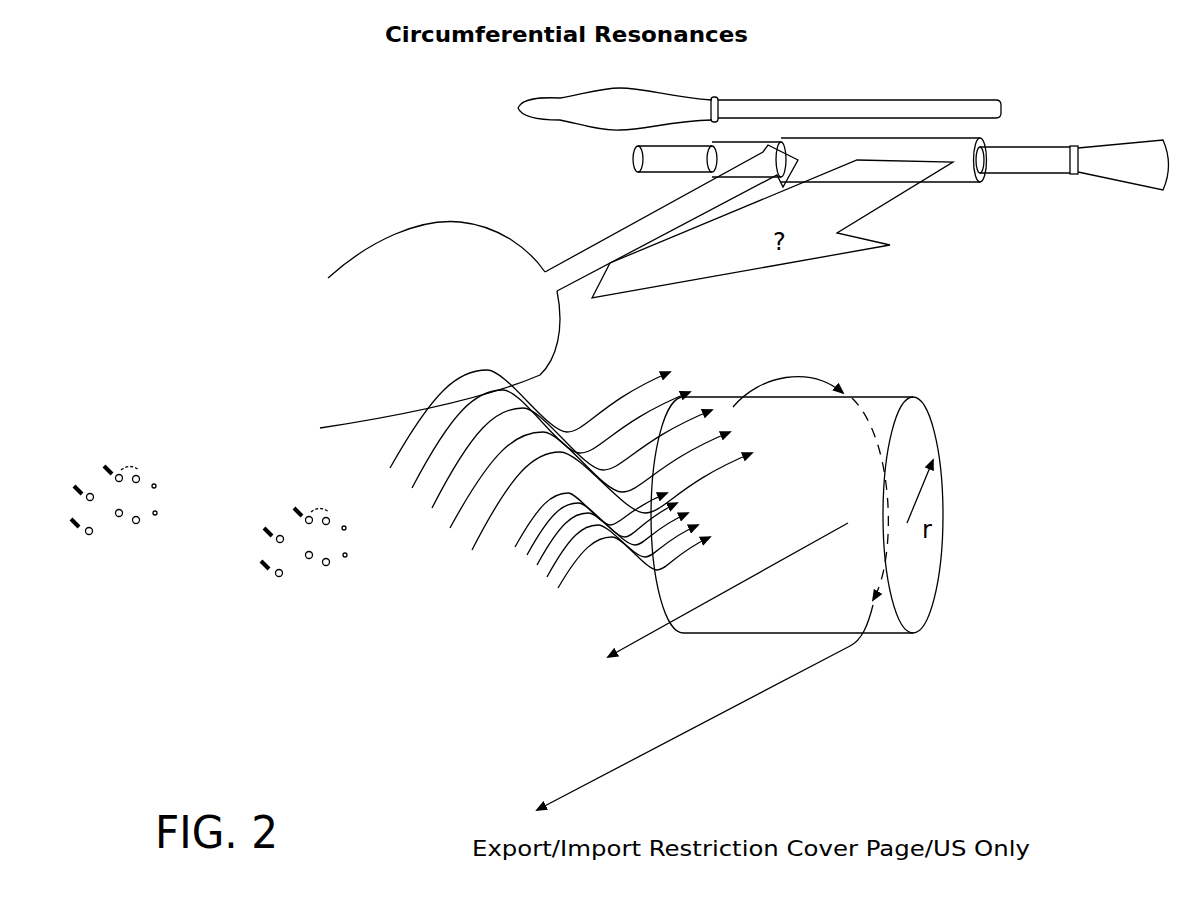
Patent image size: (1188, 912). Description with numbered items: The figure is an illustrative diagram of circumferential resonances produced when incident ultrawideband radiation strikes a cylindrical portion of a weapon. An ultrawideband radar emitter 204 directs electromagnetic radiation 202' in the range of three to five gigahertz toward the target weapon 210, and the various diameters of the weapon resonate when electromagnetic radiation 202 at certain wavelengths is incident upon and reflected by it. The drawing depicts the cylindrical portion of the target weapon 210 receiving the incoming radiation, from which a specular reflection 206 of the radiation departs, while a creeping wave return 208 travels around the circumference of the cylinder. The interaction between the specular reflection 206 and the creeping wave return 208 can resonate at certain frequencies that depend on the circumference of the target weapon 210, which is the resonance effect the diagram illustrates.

The electromagnetic radiation 202 is at (571, 512).
The electromagnetic radiation 202' is at (440, 309).
The ultrawideband radar emitter 204 is at (131, 406).
The specular reflection 206 is at (645, 635).
The creeping wave return 208 is at (770, 690).
The target weapon 210 is at (1040, 117).